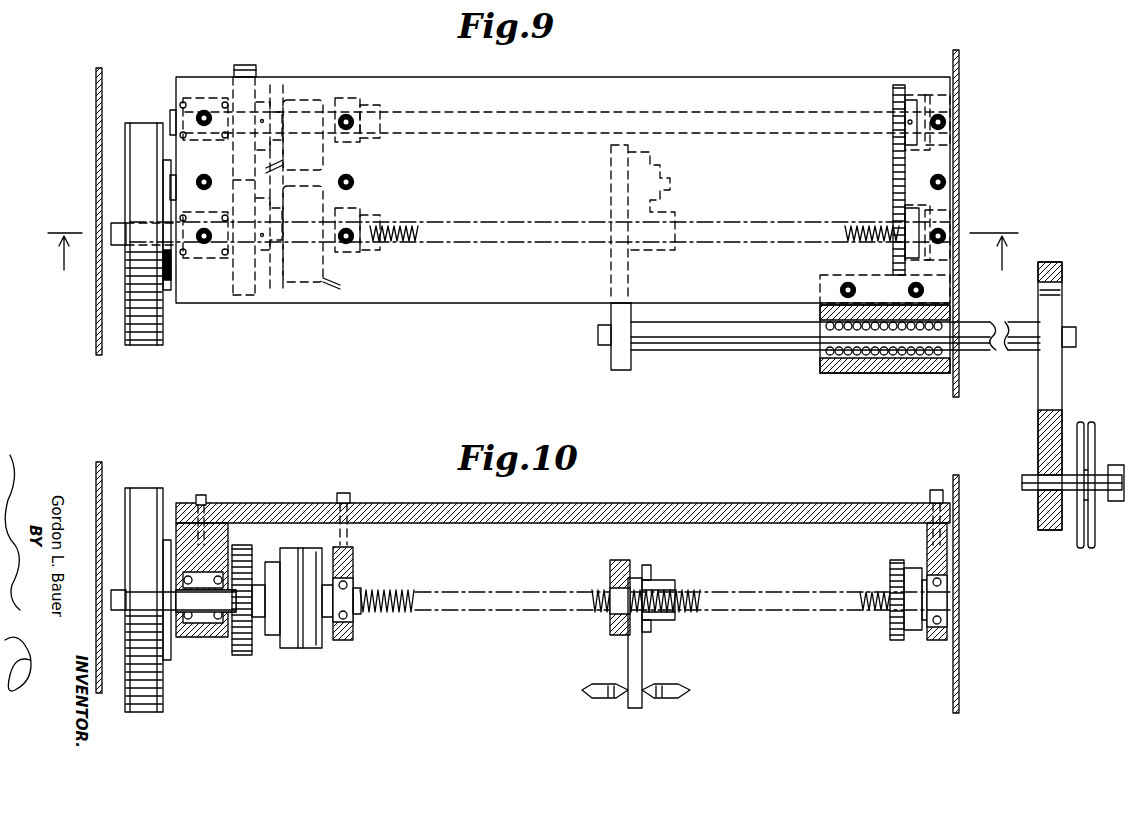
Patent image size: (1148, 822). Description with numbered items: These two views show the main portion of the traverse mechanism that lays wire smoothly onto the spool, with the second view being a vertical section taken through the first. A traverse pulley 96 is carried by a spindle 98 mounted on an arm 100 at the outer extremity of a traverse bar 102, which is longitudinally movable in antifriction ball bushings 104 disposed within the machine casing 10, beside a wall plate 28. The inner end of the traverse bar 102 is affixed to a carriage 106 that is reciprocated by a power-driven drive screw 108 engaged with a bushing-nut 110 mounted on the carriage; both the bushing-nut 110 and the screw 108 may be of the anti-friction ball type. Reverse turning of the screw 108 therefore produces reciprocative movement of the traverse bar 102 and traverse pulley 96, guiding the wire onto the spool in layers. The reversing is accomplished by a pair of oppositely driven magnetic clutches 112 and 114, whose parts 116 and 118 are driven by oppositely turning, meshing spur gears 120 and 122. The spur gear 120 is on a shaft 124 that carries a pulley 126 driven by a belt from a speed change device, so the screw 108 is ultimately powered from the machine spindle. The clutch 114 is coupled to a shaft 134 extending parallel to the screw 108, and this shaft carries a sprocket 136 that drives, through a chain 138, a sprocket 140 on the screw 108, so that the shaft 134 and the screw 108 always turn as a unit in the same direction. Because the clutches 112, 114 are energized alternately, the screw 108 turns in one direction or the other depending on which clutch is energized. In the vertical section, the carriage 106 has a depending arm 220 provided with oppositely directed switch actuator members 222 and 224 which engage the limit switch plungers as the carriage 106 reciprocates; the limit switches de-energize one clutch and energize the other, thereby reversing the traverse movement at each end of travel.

In FIG. 9, the side wall plate 28 is at (96, 110).
In FIG. 10, the side wall plate 28 is at (96, 480).
In FIG. 9, the traverse pulley 96 is at (1085, 550).
In FIG. 9, the spindle 98 is at (1026, 477).
In FIG. 9, the arm 100 is at (1038, 426).
In FIG. 9, the traverse bar 102 is at (976, 350).
In FIG. 9, the antifriction ball bushings 104 is at (855, 370).
In FIG. 9, the carriage 106 is at (610, 362).
In FIG. 10, the carriage 106 is at (608, 637).
In FIG. 9, the drive screw 108 is at (778, 248).
In FIG. 10, the drive screw 108 is at (682, 590).
In FIG. 9, the bushing-nut 110 is at (650, 250).
In FIG. 10, the bushing-nut 110 is at (668, 620).
In FIG. 9, the magnetic clutch 112 is at (305, 290).
In FIG. 10, the magnetic clutch 112 is at (300, 652).
In FIG. 9, the magnetic clutch 114 is at (312, 90).
In FIG. 10, the magnetic clutch 114 is at (343, 566).
In FIG. 9, the clutch part 116 is at (268, 300).
In FIG. 9, the clutch part 118 is at (270, 80).
In FIG. 9, the spur gear 120 is at (242, 300).
In FIG. 10, the spur gear 120 is at (244, 658).
In FIG. 9, the spur gear 122 is at (241, 64).
In FIG. 9, the shaft 124 is at (118, 224).
In FIG. 10, the shaft 124 is at (196, 637).
In FIG. 9, the pulley 126 is at (143, 130).
In FIG. 10, the pulley 126 is at (142, 495).
In FIG. 9, the shaft 134 is at (458, 98).
In FIG. 9, the sprocket 136 is at (912, 95).
In FIG. 9, the chain 138 is at (893, 186).
In FIG. 9, the sprocket 140 is at (915, 205).
In FIG. 10, the sprocket 140 is at (905, 640).
In FIG. 10, the depending arm 220 is at (642, 664).
In FIG. 10, the switch actuator member 222 is at (590, 700).
In FIG. 10, the switch actuator member 224 is at (682, 700).
In FIG. 9, the machine casing 10 is at (533, 268).